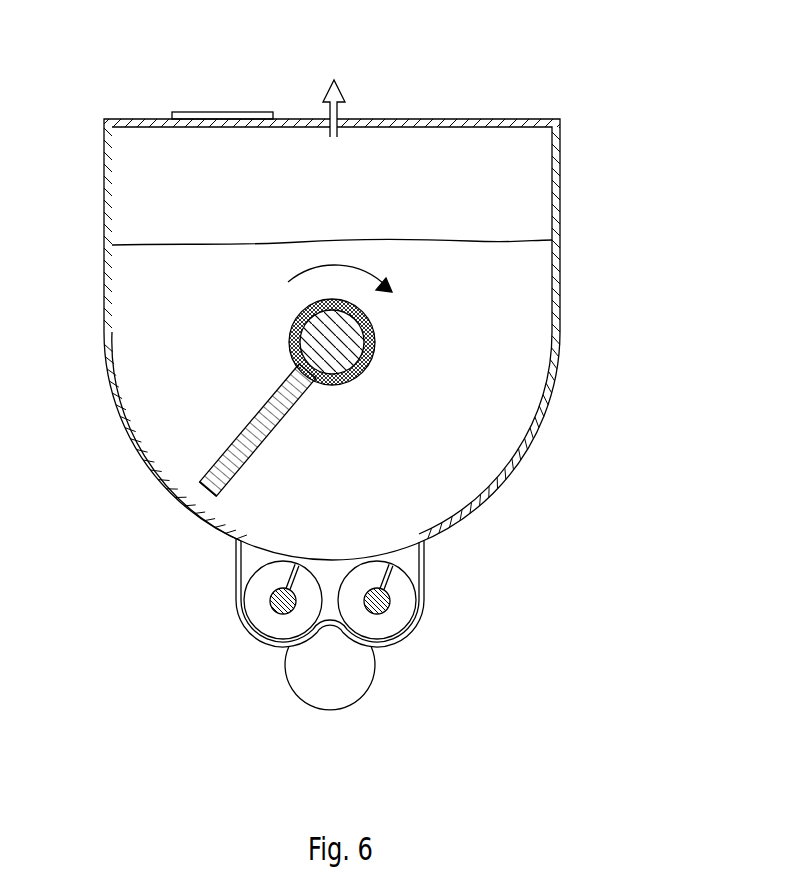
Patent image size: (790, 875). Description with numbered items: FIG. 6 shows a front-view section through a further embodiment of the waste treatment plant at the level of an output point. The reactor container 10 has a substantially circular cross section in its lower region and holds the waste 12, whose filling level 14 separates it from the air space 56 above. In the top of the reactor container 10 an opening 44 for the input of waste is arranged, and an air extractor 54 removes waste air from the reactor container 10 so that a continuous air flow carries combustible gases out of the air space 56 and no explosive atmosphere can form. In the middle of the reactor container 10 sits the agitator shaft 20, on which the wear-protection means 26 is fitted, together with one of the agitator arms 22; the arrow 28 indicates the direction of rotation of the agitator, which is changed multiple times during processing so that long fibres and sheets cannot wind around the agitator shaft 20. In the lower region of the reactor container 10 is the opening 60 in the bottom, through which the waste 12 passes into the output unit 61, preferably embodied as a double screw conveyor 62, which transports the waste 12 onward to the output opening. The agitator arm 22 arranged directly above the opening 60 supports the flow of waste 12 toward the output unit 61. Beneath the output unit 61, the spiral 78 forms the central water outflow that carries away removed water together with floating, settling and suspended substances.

The reactor container 10 is at (563, 218).
The waste 12 is at (527, 340).
The filling level 14 is at (270, 243).
The agitator shaft 20 is at (317, 342).
The agitator arm 22 is at (203, 488).
The wear-protection means 26 is at (290, 352).
The arrow indicating direction of rotation 28 is at (333, 265).
The opening for the input of waste 44 is at (222, 112).
The air extractor 54 is at (346, 103).
The air space 56 is at (406, 200).
The opening in the bottom 60 is at (333, 558).
The output unit 61 is at (465, 587).
The double screw conveyor 62 is at (400, 607).
The spiral 78 is at (355, 675).